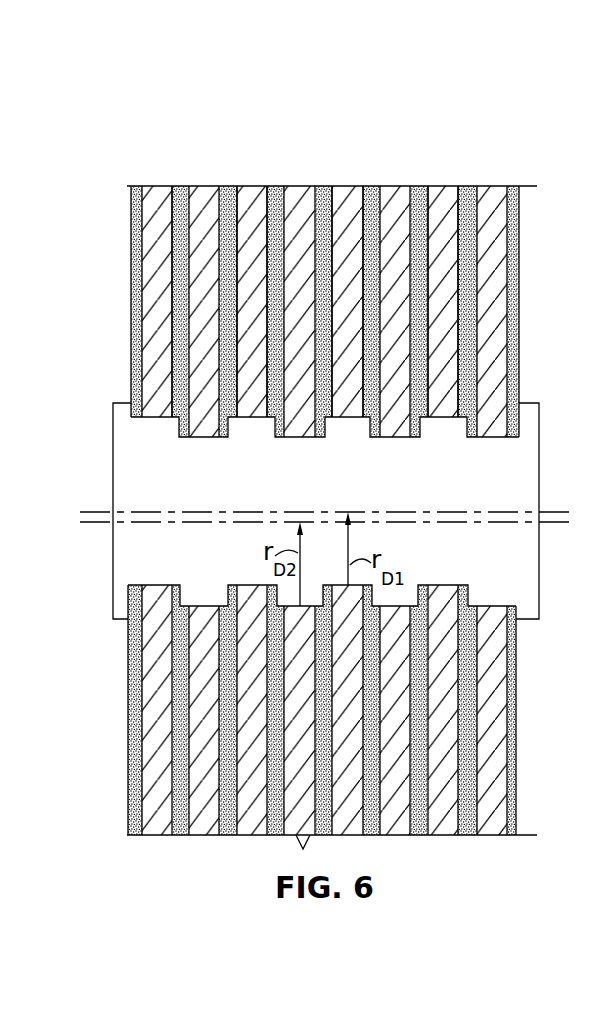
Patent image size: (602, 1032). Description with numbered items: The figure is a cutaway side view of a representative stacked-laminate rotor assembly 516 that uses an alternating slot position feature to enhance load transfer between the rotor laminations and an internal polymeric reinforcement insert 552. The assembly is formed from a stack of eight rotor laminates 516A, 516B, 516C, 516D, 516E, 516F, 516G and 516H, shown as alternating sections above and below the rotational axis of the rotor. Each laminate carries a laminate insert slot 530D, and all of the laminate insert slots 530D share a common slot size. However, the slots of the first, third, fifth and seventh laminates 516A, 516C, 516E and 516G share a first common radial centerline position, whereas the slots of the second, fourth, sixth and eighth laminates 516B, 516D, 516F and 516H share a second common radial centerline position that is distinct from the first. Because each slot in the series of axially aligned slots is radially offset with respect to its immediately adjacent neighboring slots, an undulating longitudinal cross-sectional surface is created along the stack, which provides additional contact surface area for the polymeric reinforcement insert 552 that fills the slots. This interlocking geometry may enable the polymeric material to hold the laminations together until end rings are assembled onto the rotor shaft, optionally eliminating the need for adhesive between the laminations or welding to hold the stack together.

The stacked-laminate rotor assembly 516 is at (277, 450).
The first rotor laminate 516A is at (155, 166).
The second rotor laminate 516B is at (206, 166).
The third rotor laminate 516C is at (252, 166).
The fourth rotor laminate 516D is at (301, 182).
The fifth rotor laminate 516E is at (351, 166).
The sixth rotor laminate 516F is at (400, 166).
The seventh rotor laminate 516G is at (449, 166).
The eighth rotor laminate 516H is at (492, 166).
The laminate insert slot 530D is at (178, 418).
The polymeric reinforcement insert 552 is at (112, 429).